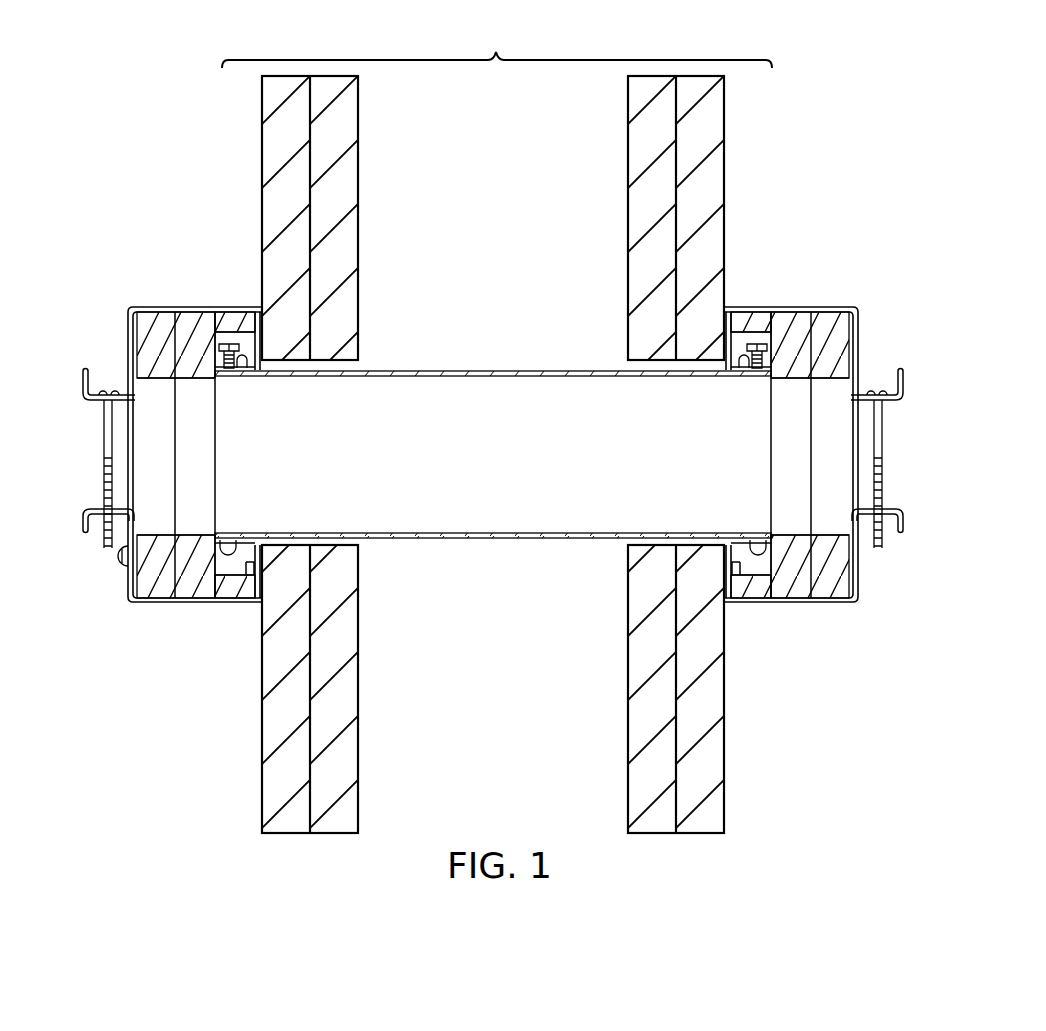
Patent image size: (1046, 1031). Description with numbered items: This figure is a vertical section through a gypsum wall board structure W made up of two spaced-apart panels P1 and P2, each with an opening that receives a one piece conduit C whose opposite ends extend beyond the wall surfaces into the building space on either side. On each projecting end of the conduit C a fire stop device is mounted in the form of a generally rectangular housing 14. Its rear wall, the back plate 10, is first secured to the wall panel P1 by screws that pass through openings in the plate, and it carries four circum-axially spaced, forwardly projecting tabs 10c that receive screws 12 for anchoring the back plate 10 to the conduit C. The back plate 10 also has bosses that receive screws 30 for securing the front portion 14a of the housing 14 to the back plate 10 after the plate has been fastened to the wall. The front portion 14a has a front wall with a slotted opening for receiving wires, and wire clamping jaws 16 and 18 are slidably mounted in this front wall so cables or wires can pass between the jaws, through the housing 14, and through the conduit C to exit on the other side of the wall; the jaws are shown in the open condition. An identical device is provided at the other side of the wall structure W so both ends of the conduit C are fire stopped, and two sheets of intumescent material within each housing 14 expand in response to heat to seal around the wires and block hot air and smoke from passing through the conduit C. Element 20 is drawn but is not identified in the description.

The wall structure W is at (497, 42).
The panel P1 is at (378, 718).
The panel P2 is at (603, 709).
The conduit C is at (462, 371).
The back plate 10 is at (270, 562).
The forwardly projecting tabs 10c is at (238, 378).
The screws 12 is at (230, 318).
The rectangular housing 14 is at (176, 270).
The front portion 14a is at (148, 309).
The wire clamping jaw 16 is at (85, 370).
The wire clamping jaw 18 is at (85, 528).
The strap 20 is at (104, 446).
The screws 30 is at (120, 563).